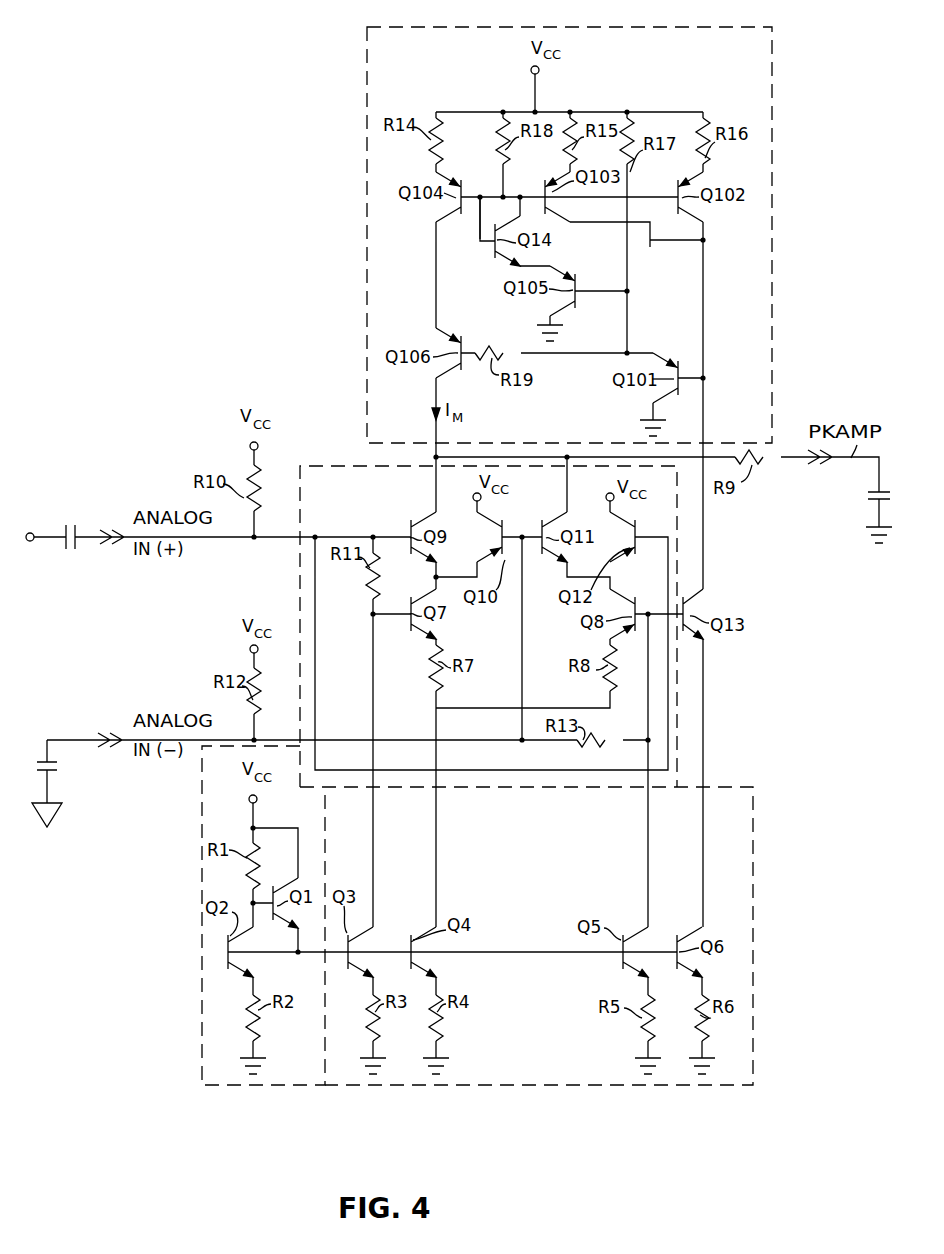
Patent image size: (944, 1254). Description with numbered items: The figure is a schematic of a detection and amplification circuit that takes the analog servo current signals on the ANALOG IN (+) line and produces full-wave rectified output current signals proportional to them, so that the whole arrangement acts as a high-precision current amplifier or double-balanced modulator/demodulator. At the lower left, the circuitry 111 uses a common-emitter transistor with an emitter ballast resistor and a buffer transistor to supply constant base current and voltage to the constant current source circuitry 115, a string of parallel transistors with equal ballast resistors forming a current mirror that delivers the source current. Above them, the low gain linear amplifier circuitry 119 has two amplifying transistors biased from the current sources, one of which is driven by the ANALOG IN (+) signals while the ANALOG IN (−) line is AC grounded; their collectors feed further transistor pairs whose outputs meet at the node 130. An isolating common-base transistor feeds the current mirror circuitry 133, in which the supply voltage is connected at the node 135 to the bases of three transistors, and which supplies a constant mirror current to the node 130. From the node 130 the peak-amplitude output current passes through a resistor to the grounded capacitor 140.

The constant base current and voltage circuitry 111 is at (210, 1053).
The constant current source circuitry 115 is at (580, 1088).
The low gain linear amplifier circuitry 119 is at (304, 474).
The node 130 is at (427, 456).
The current mirror circuitry 133 is at (376, 63).
The node 135 is at (482, 192).
The grounded capacitor 140 is at (866, 495).